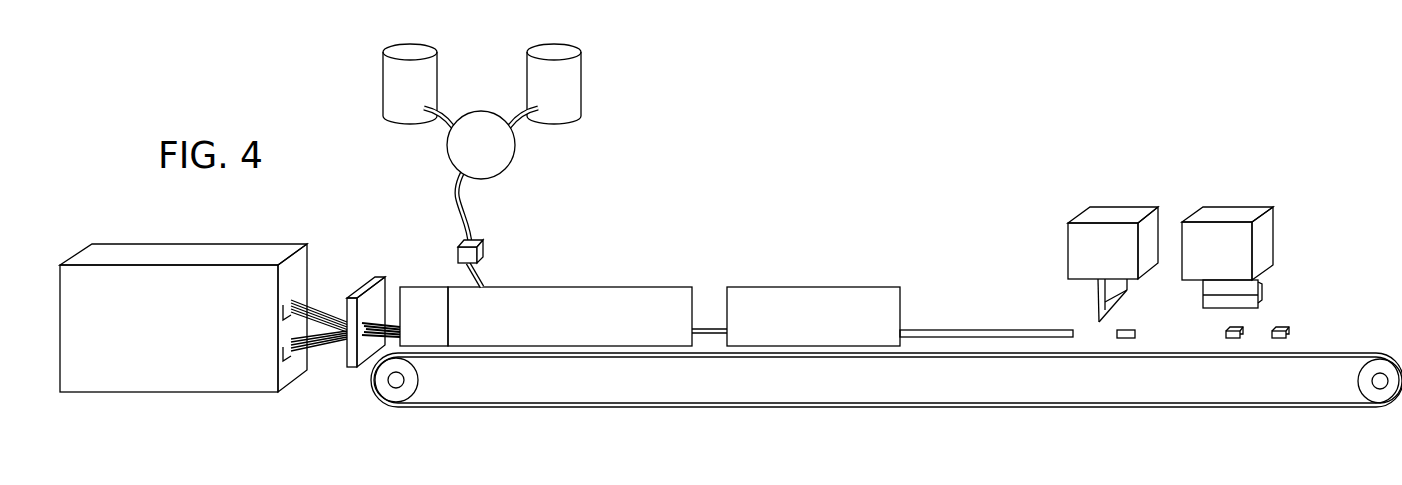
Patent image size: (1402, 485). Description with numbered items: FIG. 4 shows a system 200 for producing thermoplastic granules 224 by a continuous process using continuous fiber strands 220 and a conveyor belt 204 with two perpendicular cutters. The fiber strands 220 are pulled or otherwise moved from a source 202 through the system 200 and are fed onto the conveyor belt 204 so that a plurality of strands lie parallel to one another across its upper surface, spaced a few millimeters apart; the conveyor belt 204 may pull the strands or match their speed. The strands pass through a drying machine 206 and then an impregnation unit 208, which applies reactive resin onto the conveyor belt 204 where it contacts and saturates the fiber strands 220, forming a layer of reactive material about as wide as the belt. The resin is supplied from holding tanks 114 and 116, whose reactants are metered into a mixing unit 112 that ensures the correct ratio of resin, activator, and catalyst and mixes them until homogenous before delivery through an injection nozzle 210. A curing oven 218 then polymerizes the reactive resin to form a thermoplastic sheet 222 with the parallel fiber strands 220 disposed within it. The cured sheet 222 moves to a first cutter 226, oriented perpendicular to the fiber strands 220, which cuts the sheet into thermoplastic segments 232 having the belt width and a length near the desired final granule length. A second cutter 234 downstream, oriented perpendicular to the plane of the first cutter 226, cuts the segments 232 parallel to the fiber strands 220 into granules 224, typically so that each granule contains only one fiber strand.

The mixing unit 112 is at (492, 173).
The holding tank 114 is at (392, 82).
The holding tank 116 is at (570, 90).
The system 200 is at (815, 157).
The source 202 is at (151, 324).
The conveyor belt 204 is at (377, 400).
The drying machine 206 is at (408, 324).
The impregnation unit 208 is at (565, 324).
The injection nozzle 210 is at (480, 277).
The curing oven 218 is at (796, 324).
The fiber strands 220 is at (325, 307).
The thermoplastic sheet 222 is at (975, 330).
The granules 224 is at (1290, 330).
The first cutter 226 is at (1118, 215).
The thermoplastic segments 232 is at (1128, 338).
The second cutter 234 is at (1243, 217).